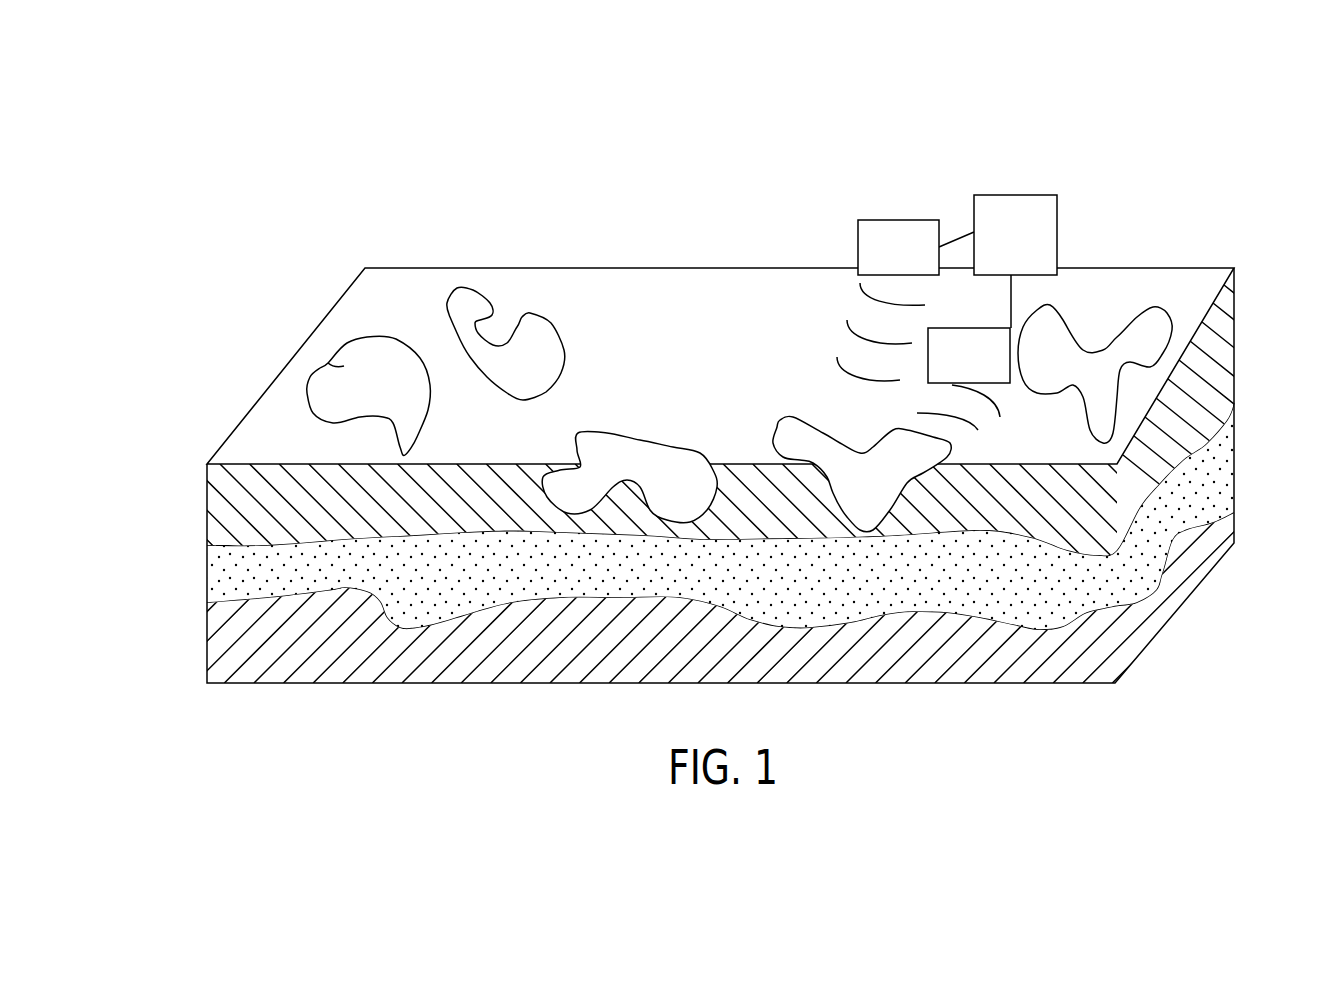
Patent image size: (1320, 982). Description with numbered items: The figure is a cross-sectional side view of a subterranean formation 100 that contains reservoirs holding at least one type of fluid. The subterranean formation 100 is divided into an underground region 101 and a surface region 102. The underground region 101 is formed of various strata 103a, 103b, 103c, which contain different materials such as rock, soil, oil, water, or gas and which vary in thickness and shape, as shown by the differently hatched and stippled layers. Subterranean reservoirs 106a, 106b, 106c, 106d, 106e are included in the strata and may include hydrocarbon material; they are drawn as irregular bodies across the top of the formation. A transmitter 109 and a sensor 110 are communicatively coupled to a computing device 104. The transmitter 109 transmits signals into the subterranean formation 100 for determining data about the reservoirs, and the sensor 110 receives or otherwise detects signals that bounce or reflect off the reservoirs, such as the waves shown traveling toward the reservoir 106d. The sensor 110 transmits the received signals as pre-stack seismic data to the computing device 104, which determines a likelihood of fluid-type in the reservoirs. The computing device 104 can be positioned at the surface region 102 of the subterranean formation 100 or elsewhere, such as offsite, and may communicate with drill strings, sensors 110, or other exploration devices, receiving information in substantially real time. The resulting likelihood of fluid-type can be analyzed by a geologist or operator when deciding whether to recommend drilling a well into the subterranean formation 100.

The subterranean formation 100 is at (322, 165).
The underground region 101 is at (175, 558).
The surface region 102 is at (730, 283).
The stratum 103a is at (1225, 353).
The stratum 103b is at (1227, 455).
The stratum 103c is at (1225, 528).
The computing device 104 is at (1017, 207).
The subterranean reservoir 106a is at (352, 339).
The subterranean reservoir 106b is at (530, 313).
The subterranean reservoir 106c is at (633, 433).
The subterranean reservoir 106d is at (813, 425).
The subterranean reservoir 106e is at (1137, 317).
The transmitter 109 is at (903, 232).
The sensor 110 is at (970, 348).